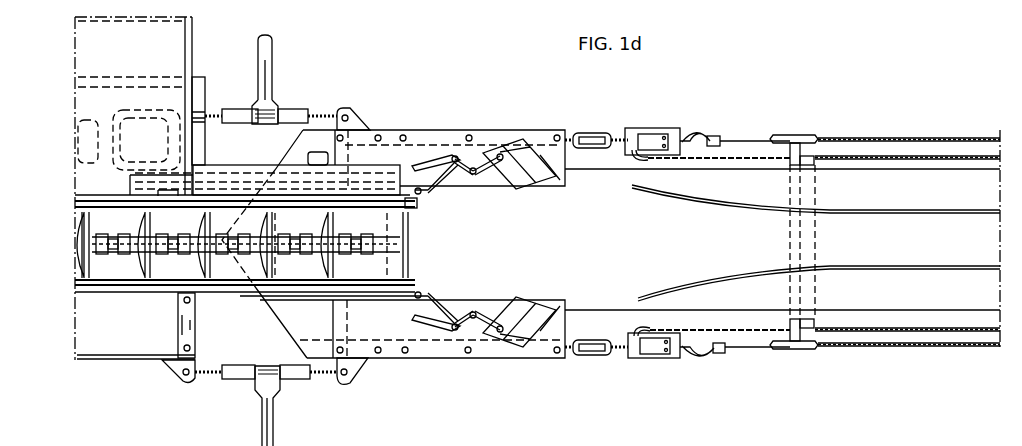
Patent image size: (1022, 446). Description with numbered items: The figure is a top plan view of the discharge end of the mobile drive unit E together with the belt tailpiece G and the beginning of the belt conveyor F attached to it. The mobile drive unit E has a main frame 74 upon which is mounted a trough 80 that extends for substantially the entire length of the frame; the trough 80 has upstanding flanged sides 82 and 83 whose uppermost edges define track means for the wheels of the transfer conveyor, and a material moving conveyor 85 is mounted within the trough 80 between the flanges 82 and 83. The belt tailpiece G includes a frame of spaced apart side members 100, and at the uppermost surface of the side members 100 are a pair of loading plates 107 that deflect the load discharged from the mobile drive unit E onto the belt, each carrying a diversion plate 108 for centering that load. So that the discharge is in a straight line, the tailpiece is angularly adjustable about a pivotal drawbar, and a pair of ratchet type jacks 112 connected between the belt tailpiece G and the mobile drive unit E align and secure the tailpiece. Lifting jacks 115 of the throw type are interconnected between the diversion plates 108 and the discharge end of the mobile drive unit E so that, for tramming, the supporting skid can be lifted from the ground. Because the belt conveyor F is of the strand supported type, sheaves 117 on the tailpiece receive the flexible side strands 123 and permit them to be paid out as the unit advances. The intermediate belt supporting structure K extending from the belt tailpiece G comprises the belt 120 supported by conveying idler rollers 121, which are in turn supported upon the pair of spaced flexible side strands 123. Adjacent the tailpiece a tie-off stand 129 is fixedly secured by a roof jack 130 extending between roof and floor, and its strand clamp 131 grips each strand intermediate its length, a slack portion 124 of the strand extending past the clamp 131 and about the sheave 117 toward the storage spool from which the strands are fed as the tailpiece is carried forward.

The main frame 74 is at (199, 88).
The trough 80 is at (211, 245).
The upstanding flanged side 82 is at (76, 206).
The upstanding flanged side 83 is at (75, 282).
The material moving conveyor 85 is at (82, 257).
The side member 100 is at (480, 145).
The loading plate 107 is at (555, 177).
The diversion plate 108 is at (522, 175).
The ratchet type jack 112 is at (298, 112).
The lifting jack 115 is at (452, 183).
The sheave 117 is at (592, 140).
The belt 120 is at (960, 290).
The conveying idler roller 121 is at (798, 348).
The flexible side strand 123 is at (934, 138).
The slack portion 124 is at (848, 156).
The tie-off stand 129 is at (660, 135).
The roof jack 130 is at (658, 143).
The strand clamp 131 is at (728, 134).
The mobile drive unit E is at (297, 55).
The belt conveyor F is at (784, 130).
The belt tailpiece G is at (444, 113).
The intermediate belt supporting structure K is at (683, 364).